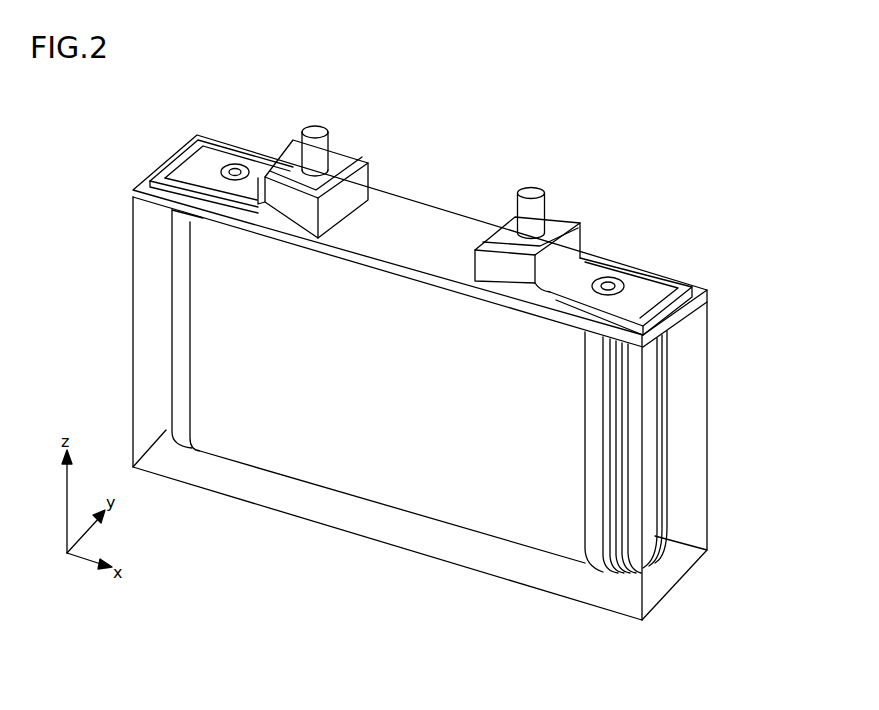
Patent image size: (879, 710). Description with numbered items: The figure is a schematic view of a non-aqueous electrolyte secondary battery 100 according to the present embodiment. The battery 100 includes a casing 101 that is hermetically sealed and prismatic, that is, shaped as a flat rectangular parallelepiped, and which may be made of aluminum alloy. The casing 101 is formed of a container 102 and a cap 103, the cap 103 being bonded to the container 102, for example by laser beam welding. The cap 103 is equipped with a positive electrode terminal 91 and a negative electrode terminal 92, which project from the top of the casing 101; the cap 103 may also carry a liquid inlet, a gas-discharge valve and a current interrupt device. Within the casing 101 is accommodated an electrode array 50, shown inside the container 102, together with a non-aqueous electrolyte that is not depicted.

The electrode array 50 is at (372, 405).
The positive electrode terminal 91 is at (532, 188).
The negative electrode terminal 92 is at (316, 125).
The battery 100 is at (477, 346).
The casing 101 is at (477, 377).
The container 102 is at (707, 338).
The cap 103 is at (707, 290).